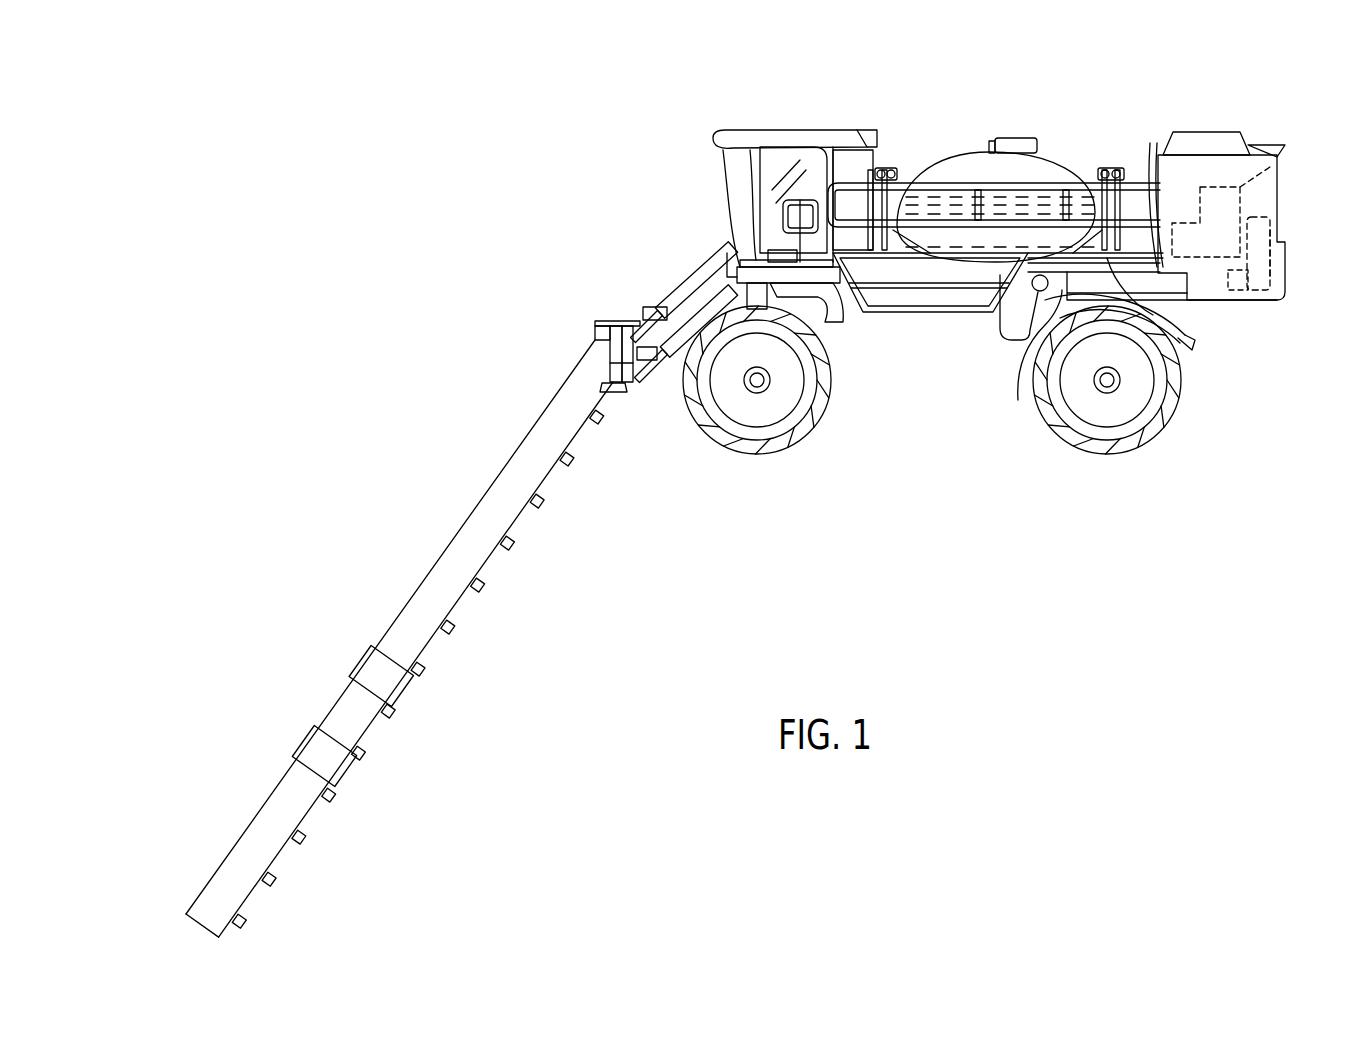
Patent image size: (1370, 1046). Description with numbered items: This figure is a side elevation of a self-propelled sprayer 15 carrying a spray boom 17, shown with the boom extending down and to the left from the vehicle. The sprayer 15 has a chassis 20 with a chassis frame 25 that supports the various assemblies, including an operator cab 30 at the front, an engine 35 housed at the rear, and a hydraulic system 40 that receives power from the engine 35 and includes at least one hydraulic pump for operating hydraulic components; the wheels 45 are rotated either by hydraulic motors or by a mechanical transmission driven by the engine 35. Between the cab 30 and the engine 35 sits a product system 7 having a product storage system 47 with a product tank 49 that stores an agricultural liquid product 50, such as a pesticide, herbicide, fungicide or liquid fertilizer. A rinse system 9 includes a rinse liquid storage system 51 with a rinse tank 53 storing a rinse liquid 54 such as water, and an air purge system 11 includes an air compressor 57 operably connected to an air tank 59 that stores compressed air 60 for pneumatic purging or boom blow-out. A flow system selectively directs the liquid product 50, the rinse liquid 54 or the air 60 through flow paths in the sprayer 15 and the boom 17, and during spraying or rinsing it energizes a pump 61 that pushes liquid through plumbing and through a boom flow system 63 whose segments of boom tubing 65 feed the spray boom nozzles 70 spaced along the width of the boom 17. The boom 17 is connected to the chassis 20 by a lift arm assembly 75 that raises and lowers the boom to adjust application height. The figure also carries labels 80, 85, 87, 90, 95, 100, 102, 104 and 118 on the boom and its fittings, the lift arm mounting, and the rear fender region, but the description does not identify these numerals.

The product system 7 is at (918, 108).
The rinse system 9 is at (1108, 103).
The air purge system 11 is at (1262, 312).
The self-propelled sprayer 15 is at (998, 105).
The spray boom 17 is at (478, 555).
The chassis 20 is at (948, 313).
The chassis frame 25 is at (1020, 308).
The operator cab 30 is at (792, 126).
The engine 35 is at (1280, 168).
The hydraulic system 40 is at (1182, 237).
The wheels 45 is at (803, 448).
The product storage system 47 is at (1045, 130).
The product tank 49 is at (960, 143).
The agricultural liquid product 50 is at (933, 203).
The rinse liquid storage system 51 is at (1120, 158).
The rinse tank 53 is at (1113, 165).
The rinse liquid 54 is at (1110, 265).
The air compressor 57 is at (1232, 305).
The air tank 59 is at (1292, 283).
The air 60 is at (1285, 243).
The pump 61 is at (1033, 361).
The boom flow system 63 is at (596, 452).
The boom tubing 65 is at (545, 510).
The spray boom nozzles 70 is at (486, 590).
The lift arm assembly 75 is at (705, 262).
The boom section 80 is at (425, 462).
The boom mount bracket 85 is at (610, 303).
The boom arm 87 is at (580, 645).
The inner boom section 90 is at (478, 462).
The boom joint 95 is at (345, 668).
The outer boom joint 100 is at (257, 803).
The fender hook 102 is at (1195, 345).
The fender 104 is at (1182, 340).
The hood 118 is at (1247, 115).